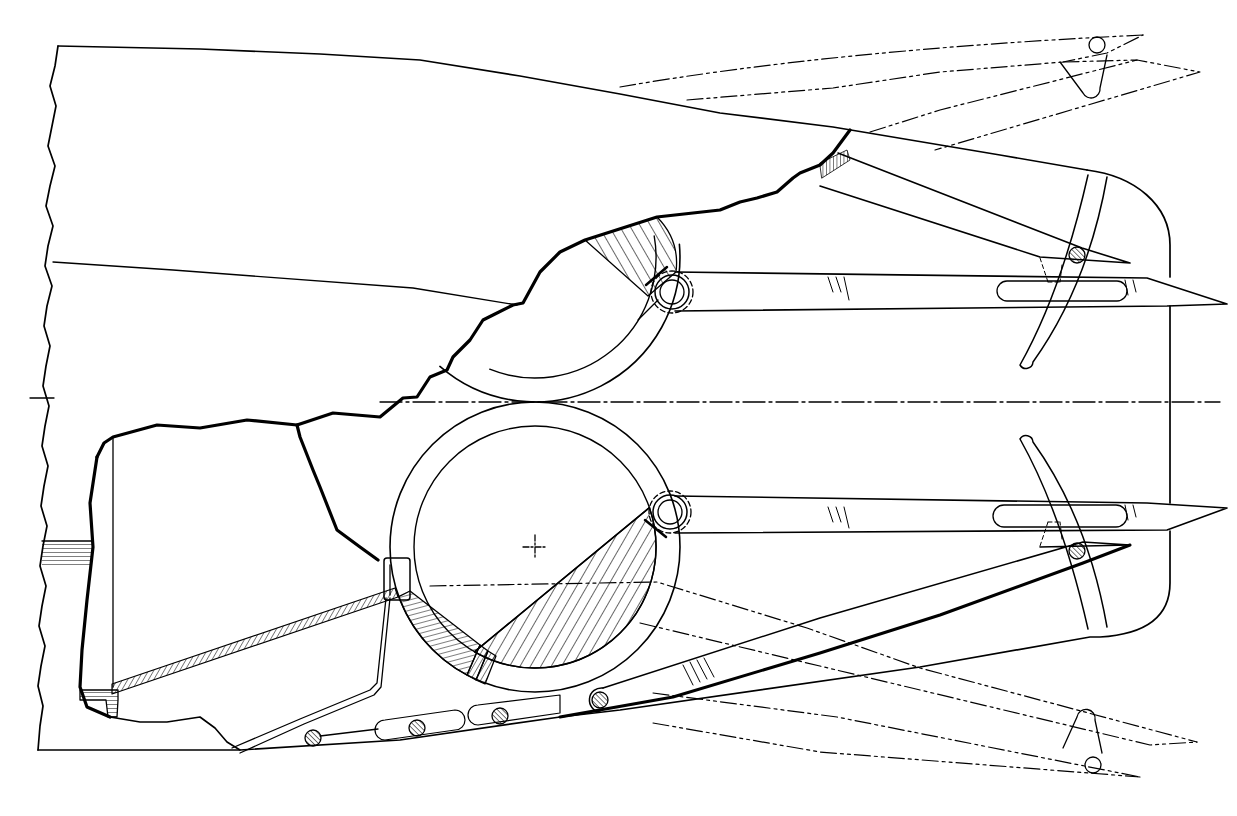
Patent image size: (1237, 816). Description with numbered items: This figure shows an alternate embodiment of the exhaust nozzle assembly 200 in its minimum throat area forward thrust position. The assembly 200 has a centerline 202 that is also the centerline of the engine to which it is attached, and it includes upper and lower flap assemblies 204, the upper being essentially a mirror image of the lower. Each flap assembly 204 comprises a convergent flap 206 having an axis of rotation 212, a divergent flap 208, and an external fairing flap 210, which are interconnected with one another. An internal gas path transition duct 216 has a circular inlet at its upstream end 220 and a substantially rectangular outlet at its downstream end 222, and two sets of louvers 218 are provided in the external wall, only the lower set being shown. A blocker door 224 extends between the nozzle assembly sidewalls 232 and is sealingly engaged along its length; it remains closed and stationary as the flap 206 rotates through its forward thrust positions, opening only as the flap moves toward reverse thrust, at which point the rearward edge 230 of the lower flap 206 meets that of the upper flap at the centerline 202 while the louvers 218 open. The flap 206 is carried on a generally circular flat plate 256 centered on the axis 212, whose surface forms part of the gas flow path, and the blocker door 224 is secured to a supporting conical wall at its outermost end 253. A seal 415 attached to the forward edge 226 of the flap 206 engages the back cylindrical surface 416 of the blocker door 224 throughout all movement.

The exhaust nozzle assembly 200 is at (1141, 158).
The centerline 202 is at (1172, 402).
The flap assembly 204 is at (942, 312).
The convergent flap 206 is at (612, 560).
The divergent flap 208 is at (876, 506).
The external fairing flap 210 is at (917, 598).
The axis of rotation 212 is at (530, 543).
The internal gas path transition duct 216 is at (255, 633).
The louvers 218 is at (555, 722).
The upstream end 220 is at (113, 688).
The downstream end 222 is at (390, 580).
The blocker door 224 is at (436, 646).
The forward edge 226 is at (483, 640).
The rearward edge 230 is at (669, 310).
The sidewall 232 is at (1158, 608).
The outermost end 253 is at (626, 442).
The circular flat plate 256 is at (535, 547).
The seal 415 is at (478, 672).
The back cylindrical surface 416 is at (466, 660).